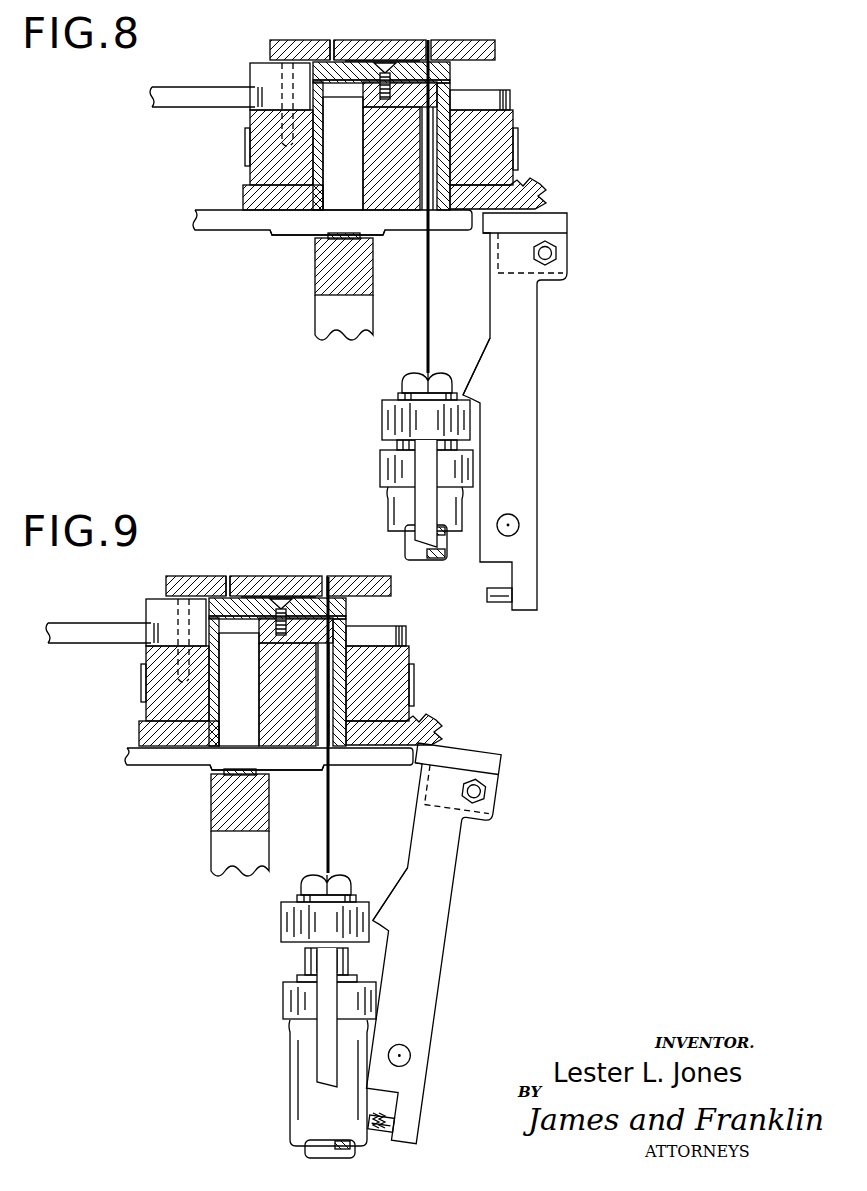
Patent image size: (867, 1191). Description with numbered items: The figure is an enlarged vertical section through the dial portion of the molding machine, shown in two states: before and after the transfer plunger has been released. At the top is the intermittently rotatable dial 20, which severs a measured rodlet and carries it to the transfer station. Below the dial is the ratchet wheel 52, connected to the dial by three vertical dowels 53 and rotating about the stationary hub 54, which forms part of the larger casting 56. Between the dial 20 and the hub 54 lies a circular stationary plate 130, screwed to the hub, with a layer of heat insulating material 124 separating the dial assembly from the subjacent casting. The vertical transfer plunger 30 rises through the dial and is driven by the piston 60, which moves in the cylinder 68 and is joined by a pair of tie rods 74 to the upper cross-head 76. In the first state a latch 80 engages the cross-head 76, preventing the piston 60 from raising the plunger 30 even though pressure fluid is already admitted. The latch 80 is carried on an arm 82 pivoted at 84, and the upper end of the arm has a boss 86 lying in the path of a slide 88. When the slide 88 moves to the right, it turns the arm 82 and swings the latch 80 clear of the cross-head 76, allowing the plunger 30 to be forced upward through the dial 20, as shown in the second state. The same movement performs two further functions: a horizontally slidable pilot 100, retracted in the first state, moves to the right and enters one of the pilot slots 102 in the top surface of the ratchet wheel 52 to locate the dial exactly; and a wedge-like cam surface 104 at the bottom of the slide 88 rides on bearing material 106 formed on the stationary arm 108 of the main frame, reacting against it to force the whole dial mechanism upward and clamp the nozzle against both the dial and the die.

In FIG. 8, the dial 20 is at (495, 42).
In FIG. 9, the dial 20 is at (390, 583).
In FIG. 8, the transfer plunger 30 is at (429, 315).
In FIG. 9, the transfer plunger 30 is at (329, 810).
In FIG. 8, the ratchet wheel 52 is at (513, 140).
In FIG. 9, the ratchet wheel 52 is at (407, 687).
In FIG. 8, the vertical dowels 53 is at (302, 58).
In FIG. 9, the vertical dowels 53 is at (185, 602).
In FIG. 8, the stationary hub 54 is at (320, 133).
In FIG. 9, the stationary hub 54 is at (213, 683).
In FIG. 8, the casting 56 is at (537, 193).
In FIG. 9, the casting 56 is at (438, 717).
In FIG. 8, the piston 60 is at (405, 545).
In FIG. 9, the piston 60 is at (303, 960).
In FIG. 8, the cylinder 68 is at (398, 500).
In FIG. 9, the cylinder 68 is at (297, 1067).
In FIG. 8, the tie rods 74 is at (427, 468).
In FIG. 9, the tie rods 74 is at (323, 988).
In FIG. 8, the cross-head 76 is at (390, 413).
In FIG. 9, the cross-head 76 is at (287, 920).
In FIG. 8, the latch 80 is at (483, 373).
In FIG. 9, the latch 80 is at (402, 895).
In FIG. 8, the arm 82 is at (528, 377).
In FIG. 9, the arm 82 is at (440, 937).
In FIG. 8, the pivot 84 is at (518, 522).
In FIG. 9, the pivot 84 is at (413, 1060).
In FIG. 8, the boss 86 is at (492, 232).
In FIG. 9, the boss 86 is at (428, 761).
In FIG. 8, the slide 88 is at (215, 228).
In FIG. 9, the slide 88 is at (152, 762).
In FIG. 8, the pilot 100 is at (200, 92).
In FIG. 9, the pilot 100 is at (76, 628).
In FIG. 8, the pilot slots 102 is at (497, 103).
In FIG. 9, the pilot slots 102 is at (393, 638).
In FIG. 8, the cam surface 104 is at (285, 234).
In FIG. 9, the cam surface 104 is at (218, 766).
In FIG. 8, the bearing material 106 is at (352, 244).
In FIG. 9, the bearing material 106 is at (252, 776).
In FIG. 8, the stationary arm 108 is at (318, 287).
In FIG. 9, the stationary arm 108 is at (212, 823).
In FIG. 8, the heat insulating material 124 is at (450, 81).
In FIG. 9, the heat insulating material 124 is at (347, 619).
In FIG. 8, the circular stationary plate 130 is at (452, 72).
In FIG. 9, the circular stationary plate 130 is at (348, 608).